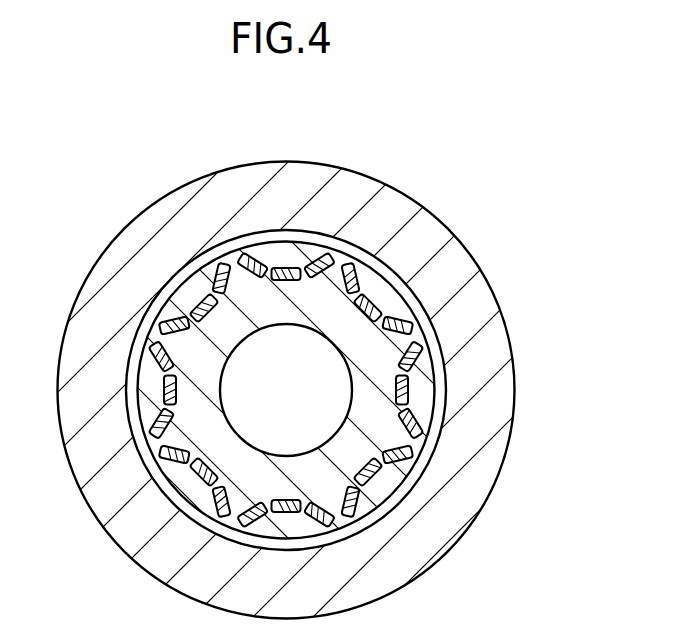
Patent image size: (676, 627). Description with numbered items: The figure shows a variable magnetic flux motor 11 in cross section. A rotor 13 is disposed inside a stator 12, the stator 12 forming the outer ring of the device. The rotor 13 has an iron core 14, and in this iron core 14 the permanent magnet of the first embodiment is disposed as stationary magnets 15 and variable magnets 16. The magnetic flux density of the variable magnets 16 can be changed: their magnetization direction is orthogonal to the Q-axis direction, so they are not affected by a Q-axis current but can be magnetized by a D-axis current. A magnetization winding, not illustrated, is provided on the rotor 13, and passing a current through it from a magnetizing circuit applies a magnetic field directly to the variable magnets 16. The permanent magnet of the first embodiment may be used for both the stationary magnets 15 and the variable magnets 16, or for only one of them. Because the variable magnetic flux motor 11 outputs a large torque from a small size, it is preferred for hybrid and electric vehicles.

The variable magnetic flux motor 11 is at (458, 167).
The stator 12 is at (501, 470).
The rotor 13 is at (495, 208).
The iron core 14 is at (393, 313).
The stationary magnets 15 is at (430, 325).
The variable magnets 16 is at (405, 387).